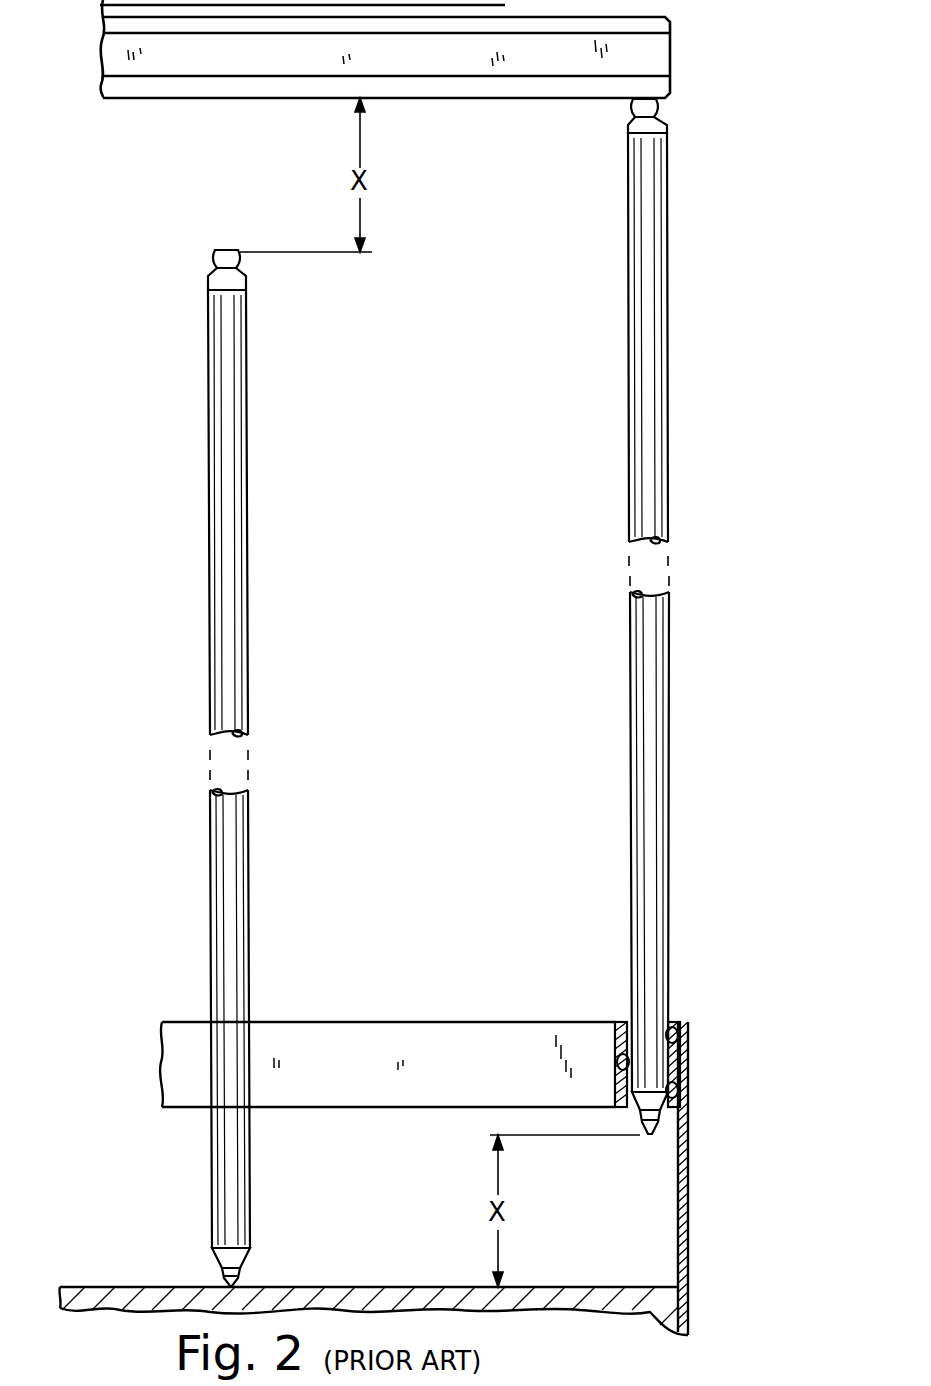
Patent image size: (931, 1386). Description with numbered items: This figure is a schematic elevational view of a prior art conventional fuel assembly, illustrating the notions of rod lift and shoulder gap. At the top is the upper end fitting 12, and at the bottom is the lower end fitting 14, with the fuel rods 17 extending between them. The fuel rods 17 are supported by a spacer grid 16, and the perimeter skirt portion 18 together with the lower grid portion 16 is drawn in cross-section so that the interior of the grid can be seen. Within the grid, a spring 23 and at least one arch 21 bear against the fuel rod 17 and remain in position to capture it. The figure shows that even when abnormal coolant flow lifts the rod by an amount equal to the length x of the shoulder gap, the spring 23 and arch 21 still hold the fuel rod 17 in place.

The upper end fitting 12 is at (684, 57).
The lower end fitting 14 is at (705, 1306).
The spacer grid 16 is at (176, 1040).
The fuel rod 17 is at (680, 735).
The perimeter skirt portion 18 is at (702, 1242).
The arch 21 is at (688, 1030).
The spring 23 is at (622, 1062).